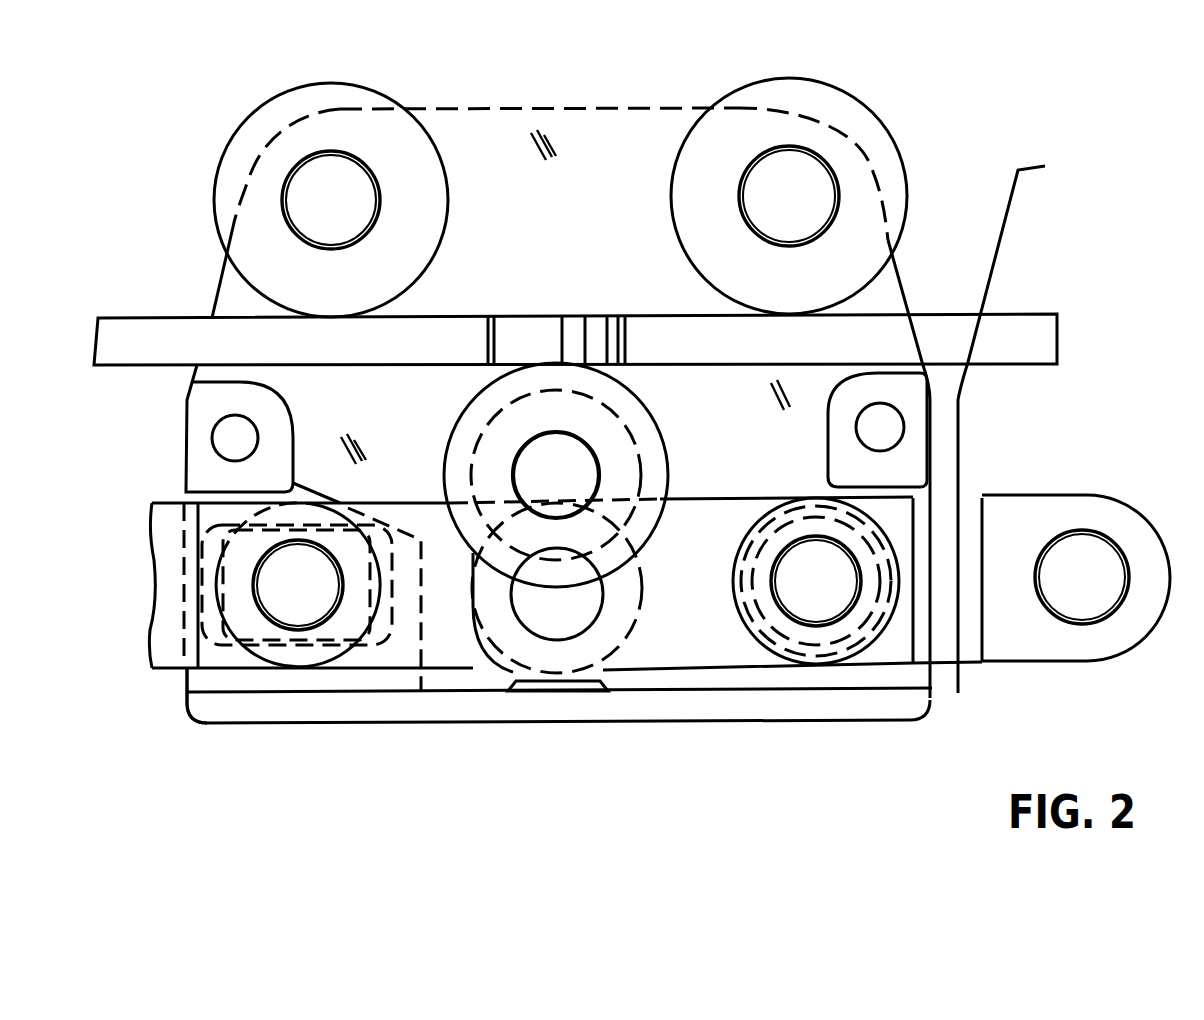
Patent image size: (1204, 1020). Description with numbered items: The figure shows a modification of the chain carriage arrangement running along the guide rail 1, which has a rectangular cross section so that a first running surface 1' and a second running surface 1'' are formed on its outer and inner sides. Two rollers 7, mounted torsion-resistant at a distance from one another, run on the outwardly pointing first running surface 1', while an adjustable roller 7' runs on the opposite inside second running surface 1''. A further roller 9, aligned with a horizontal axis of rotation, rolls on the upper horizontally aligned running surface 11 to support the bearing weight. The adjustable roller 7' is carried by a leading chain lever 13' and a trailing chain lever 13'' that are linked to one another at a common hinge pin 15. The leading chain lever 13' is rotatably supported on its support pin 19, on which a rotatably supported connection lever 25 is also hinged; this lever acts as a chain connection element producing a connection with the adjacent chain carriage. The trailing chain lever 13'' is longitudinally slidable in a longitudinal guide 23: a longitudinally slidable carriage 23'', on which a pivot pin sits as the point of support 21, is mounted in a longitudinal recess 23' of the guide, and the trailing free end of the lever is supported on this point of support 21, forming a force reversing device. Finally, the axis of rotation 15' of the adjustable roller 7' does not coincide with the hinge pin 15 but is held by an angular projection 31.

The guide rail 1 is at (441, 213).
The first running surface 1' is at (890, 403).
The second running surface 1'' is at (974, 516).
The rollers 7 is at (560, 178).
The adjustable roller 7' is at (542, 475).
The roller 9 is at (541, 316).
The upper running surface 11 is at (680, 322).
The leading chain lever 13' is at (565, 641).
The trailing chain lever 13'' is at (544, 641).
The hinge pin 15 is at (557, 664).
The axis of rotation 15' is at (591, 478).
The support pin 19 is at (820, 587).
The point of support 21 is at (300, 590).
The longitudinal guide 23 is at (274, 596).
The longitudinal recess 23' is at (176, 696).
The longitudinally slidable carriage 23'' is at (313, 655).
The connection lever 25 is at (1043, 491).
The angular projection 31 is at (622, 415).